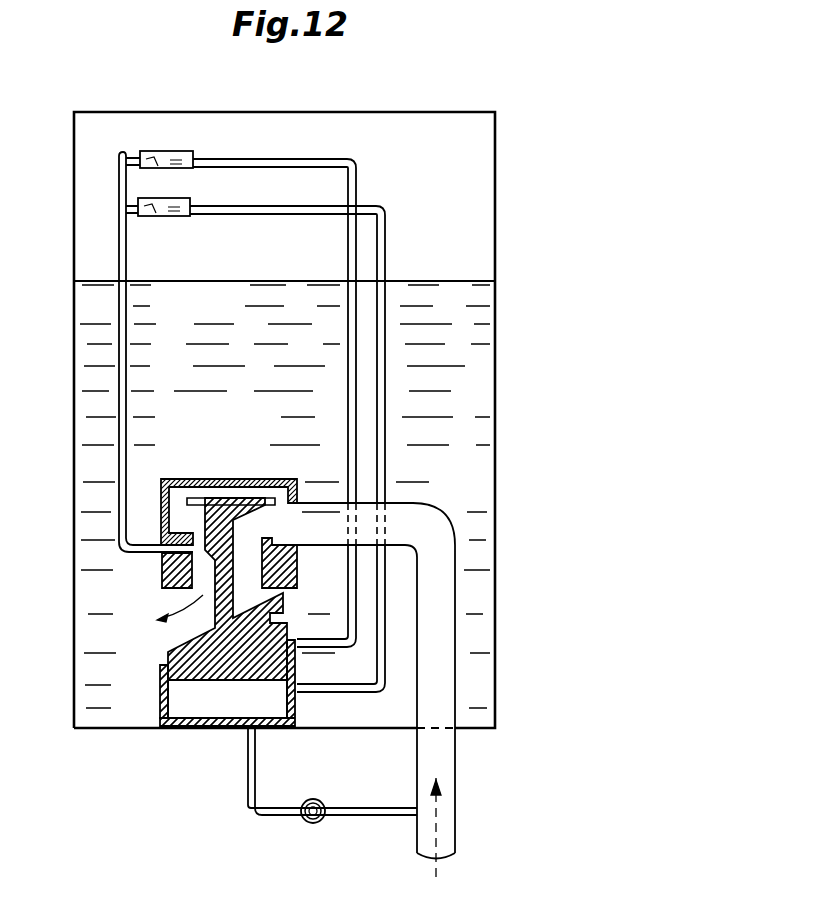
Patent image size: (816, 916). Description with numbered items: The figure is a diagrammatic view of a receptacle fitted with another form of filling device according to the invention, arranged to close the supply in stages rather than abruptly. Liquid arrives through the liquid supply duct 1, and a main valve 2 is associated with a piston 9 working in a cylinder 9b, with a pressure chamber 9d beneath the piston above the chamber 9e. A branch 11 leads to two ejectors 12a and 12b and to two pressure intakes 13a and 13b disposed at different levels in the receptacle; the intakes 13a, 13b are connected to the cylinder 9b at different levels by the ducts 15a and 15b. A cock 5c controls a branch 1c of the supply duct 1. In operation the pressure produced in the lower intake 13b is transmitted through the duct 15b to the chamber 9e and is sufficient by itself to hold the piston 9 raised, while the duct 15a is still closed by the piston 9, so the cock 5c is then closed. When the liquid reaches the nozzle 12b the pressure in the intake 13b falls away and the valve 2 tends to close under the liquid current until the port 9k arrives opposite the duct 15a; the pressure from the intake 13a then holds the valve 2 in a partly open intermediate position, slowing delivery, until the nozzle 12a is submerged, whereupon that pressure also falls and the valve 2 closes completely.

The liquid supply duct 1 is at (447, 815).
The branch of the liquid supply duct 1c is at (376, 816).
The main valve 2 is at (222, 505).
The cock 5c is at (311, 824).
The piston 9 is at (197, 653).
The cylinder 9b is at (168, 727).
The pressure chamber 9d is at (222, 683).
The chamber 9e is at (212, 712).
The port 9k is at (289, 618).
The branch 11 is at (122, 395).
The ejector 12a is at (158, 150).
The ejector 12b is at (148, 217).
The pressure intake 13a is at (180, 158).
The pressure intake 13b is at (172, 216).
The duct 15a is at (358, 162).
The duct 15b is at (386, 215).